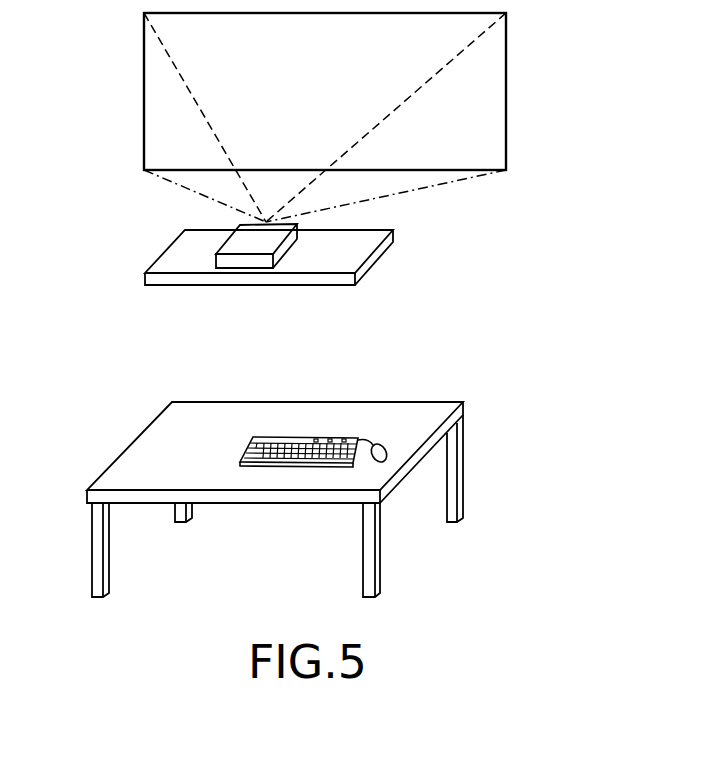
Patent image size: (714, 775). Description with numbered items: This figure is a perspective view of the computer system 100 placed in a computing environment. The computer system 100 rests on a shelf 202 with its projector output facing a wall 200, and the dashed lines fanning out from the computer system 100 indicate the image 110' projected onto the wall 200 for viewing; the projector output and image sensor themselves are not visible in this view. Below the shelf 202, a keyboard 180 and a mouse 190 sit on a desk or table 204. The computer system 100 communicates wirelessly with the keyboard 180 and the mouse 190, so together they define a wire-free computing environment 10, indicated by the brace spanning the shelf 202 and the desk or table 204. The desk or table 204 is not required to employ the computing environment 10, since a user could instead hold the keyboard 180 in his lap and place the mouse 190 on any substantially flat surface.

The wire-free computing environment 10 is at (67, 168).
The computer system 100 is at (225, 241).
The projected image 110' is at (364, 117).
The keyboard 180 is at (323, 436).
The mouse 190 is at (388, 452).
The wall 200 is at (108, 99).
The shelf 202 is at (384, 249).
The desk or table 204 is at (178, 400).